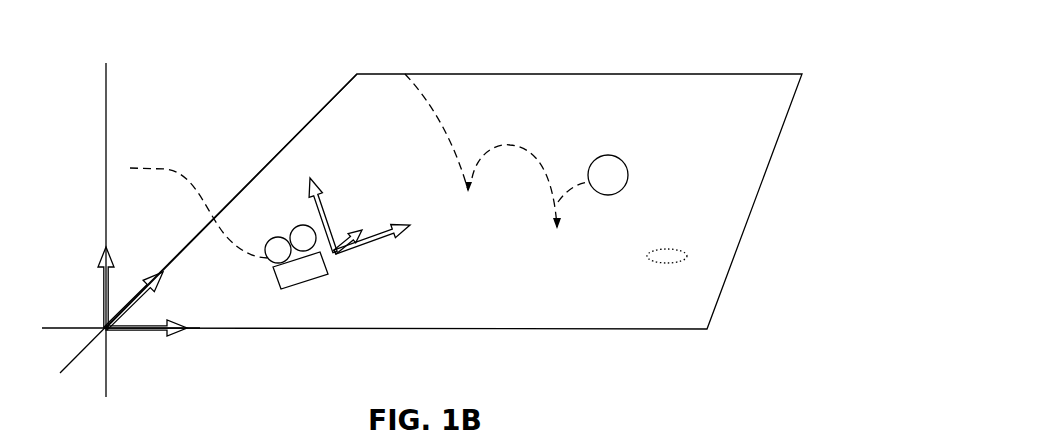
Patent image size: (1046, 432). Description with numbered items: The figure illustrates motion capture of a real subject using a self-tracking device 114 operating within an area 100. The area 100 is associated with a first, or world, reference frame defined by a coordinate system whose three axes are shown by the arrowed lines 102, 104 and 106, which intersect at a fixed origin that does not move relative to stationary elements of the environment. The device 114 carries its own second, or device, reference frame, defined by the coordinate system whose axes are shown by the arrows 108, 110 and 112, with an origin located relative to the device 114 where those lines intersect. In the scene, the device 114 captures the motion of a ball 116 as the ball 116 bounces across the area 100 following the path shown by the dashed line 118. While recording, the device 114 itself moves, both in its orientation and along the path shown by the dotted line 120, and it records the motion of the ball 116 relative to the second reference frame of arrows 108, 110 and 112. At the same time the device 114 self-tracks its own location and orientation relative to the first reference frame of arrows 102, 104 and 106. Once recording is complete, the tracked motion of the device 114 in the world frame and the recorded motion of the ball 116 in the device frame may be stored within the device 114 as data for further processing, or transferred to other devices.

The area 100 is at (546, 36).
The arrowed line 102 is at (100, 297).
The arrowed line 104 is at (163, 336).
The arrowed line 106 is at (158, 270).
The arrowed line 108 is at (318, 217).
The arrowed line 110 is at (366, 255).
The arrowed line 112 is at (360, 231).
The self-tracking device 114 is at (300, 285).
The ball 116 is at (605, 153).
The dashed line 118 is at (518, 147).
The dotted line 120 is at (203, 216).